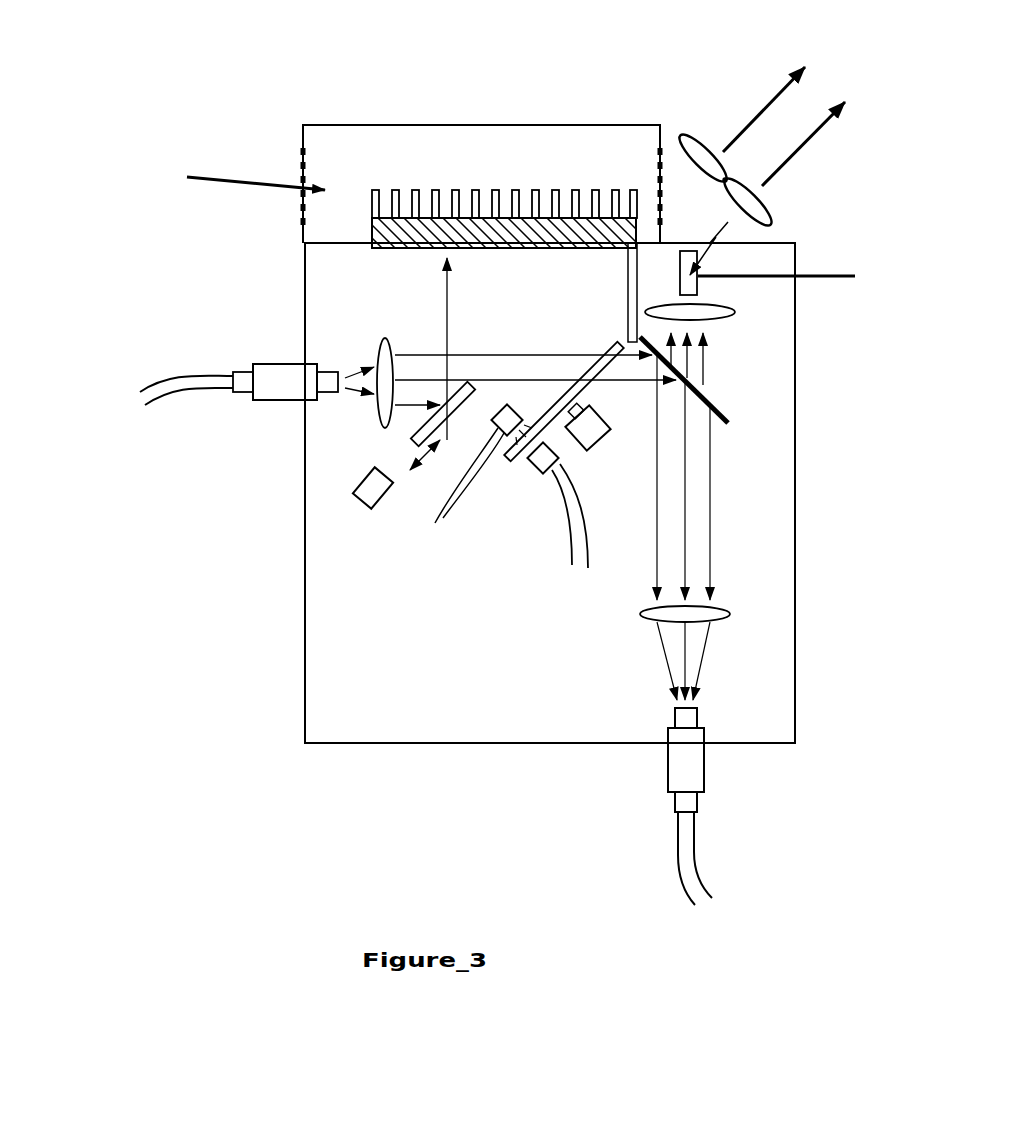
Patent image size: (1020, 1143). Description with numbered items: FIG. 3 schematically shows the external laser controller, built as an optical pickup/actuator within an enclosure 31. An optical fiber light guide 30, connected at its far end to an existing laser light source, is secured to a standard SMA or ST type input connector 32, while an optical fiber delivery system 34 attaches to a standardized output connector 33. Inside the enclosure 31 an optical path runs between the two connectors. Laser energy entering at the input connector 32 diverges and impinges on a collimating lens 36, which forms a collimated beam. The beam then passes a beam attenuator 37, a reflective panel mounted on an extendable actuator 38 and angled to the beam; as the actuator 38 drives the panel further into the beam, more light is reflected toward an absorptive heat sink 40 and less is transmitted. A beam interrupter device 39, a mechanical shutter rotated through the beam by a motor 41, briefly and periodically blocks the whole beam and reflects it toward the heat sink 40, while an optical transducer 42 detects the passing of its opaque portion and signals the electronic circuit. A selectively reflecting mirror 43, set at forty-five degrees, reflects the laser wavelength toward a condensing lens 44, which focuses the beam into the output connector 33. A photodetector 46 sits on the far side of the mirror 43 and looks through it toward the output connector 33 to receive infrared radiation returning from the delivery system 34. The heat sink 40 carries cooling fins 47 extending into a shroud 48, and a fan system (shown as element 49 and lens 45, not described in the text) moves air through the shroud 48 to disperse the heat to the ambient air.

The optical fiber light guide 30 is at (152, 402).
The enclosure 31 is at (305, 255).
The input connector 32 is at (260, 365).
The output connector 33 is at (668, 773).
The optical fiber delivery system 34 is at (697, 872).
The collimating lens 36 is at (375, 345).
The beam attenuator 37 is at (415, 435).
The extendable actuator 38 is at (353, 498).
The beam interrupter device 39 is at (585, 388).
The absorptive heat sink 40 is at (370, 247).
The motor 41 is at (605, 437).
The optical transducer 42 is at (435, 523).
The selectively reflecting mirror 43 is at (728, 418).
The condensing lens 44 is at (728, 612).
The lens 45 is at (690, 344).
The photodetector 46 is at (697, 285).
The cooling fins 47 is at (452, 192).
The shroud 48 is at (497, 123).
The fan 49 is at (708, 150).